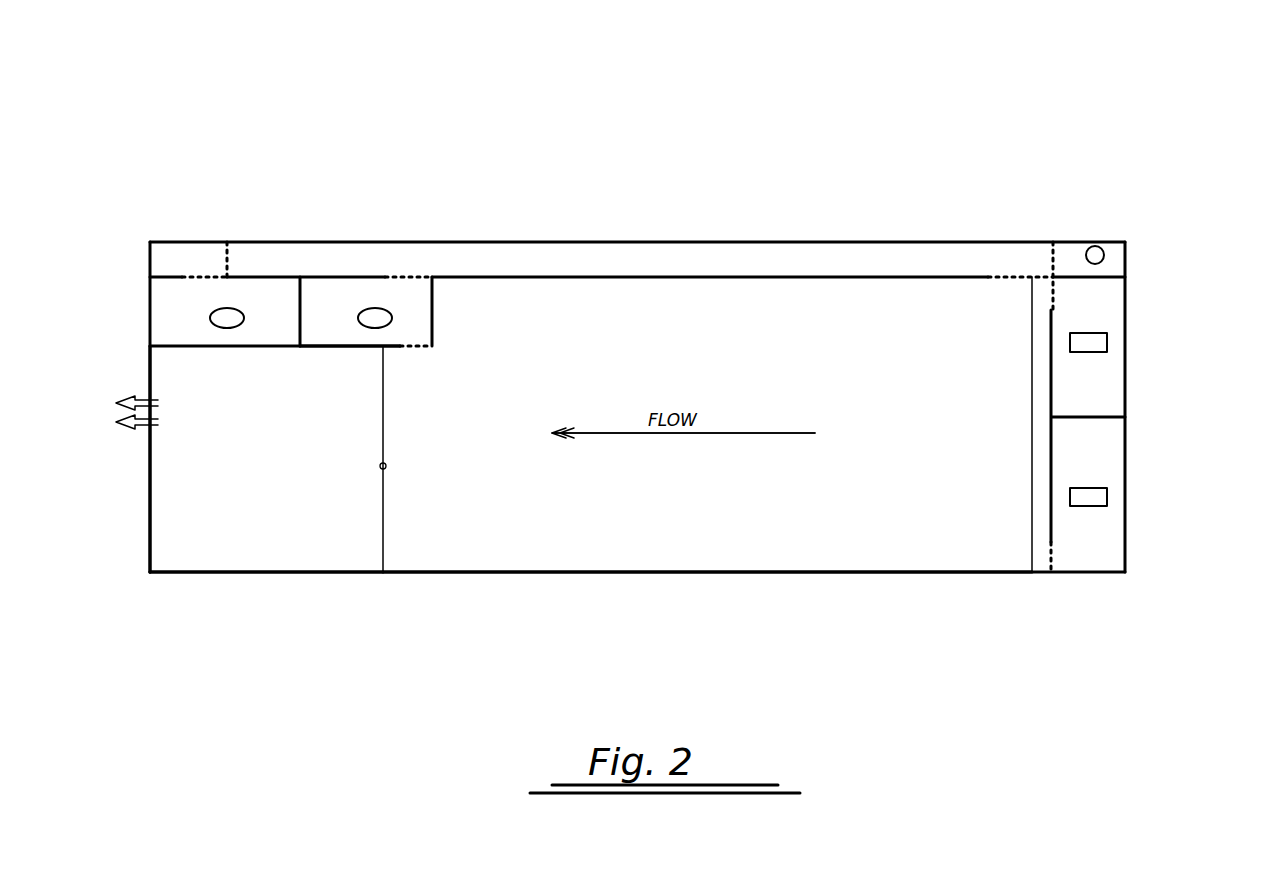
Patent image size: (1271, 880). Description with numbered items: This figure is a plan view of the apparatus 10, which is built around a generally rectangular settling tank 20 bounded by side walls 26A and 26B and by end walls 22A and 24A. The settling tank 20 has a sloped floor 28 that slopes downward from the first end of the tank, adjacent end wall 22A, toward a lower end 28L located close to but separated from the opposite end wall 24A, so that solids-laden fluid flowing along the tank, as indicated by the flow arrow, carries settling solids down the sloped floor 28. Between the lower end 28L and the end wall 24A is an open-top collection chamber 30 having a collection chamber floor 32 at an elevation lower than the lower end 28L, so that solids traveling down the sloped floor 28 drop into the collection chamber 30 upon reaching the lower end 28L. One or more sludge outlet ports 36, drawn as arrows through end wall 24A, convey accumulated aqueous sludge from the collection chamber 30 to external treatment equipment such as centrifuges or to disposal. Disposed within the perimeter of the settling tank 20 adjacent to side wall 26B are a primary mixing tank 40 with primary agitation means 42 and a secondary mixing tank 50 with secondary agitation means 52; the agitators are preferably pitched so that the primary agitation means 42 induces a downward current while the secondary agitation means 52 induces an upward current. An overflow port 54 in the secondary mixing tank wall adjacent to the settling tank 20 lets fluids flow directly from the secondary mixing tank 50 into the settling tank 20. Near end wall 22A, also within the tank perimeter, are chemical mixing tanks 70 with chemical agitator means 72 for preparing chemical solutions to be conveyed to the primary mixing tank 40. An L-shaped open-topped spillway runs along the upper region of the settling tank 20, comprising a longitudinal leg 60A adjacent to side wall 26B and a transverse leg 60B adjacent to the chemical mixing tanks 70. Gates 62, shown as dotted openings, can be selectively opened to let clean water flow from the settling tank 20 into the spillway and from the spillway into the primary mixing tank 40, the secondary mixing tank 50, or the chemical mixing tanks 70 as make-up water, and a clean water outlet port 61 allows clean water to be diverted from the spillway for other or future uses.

The apparatus 10 is at (1010, 70).
The settling tank 20 is at (678, 493).
The end wall 22A is at (1130, 527).
The end wall 24A is at (143, 532).
The side wall 26A is at (876, 580).
The side wall 26B is at (615, 238).
The sloped floor 28 is at (812, 504).
The lower end of sloped floor 28L is at (386, 465).
The collection chamber 30 is at (267, 472).
The collection chamber floor 32 is at (305, 528).
The sludge outlet port 36 is at (128, 395).
The primary mixing tank 40 is at (190, 322).
The primary agitation means 42 is at (244, 318).
The secondary mixing tank 50 is at (345, 318).
The secondary agitation means 52 is at (392, 318).
The overflow port 54 is at (418, 350).
The longitudinal leg of spillway 60A is at (548, 252).
The transverse leg of spillway 60B is at (1043, 485).
The clean water outlet port 61 is at (1097, 246).
The gates 62 is at (188, 270).
The chemical mixing tanks 70 is at (1108, 315).
The chemical agitator means 72 is at (1107, 343).